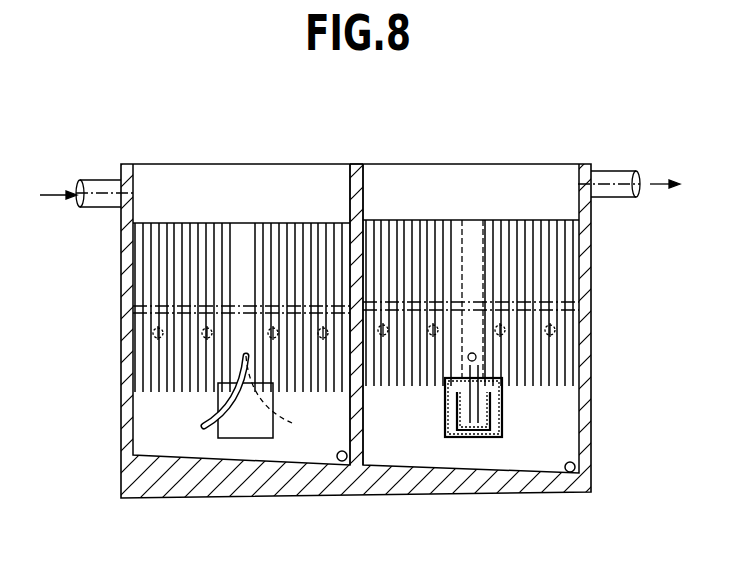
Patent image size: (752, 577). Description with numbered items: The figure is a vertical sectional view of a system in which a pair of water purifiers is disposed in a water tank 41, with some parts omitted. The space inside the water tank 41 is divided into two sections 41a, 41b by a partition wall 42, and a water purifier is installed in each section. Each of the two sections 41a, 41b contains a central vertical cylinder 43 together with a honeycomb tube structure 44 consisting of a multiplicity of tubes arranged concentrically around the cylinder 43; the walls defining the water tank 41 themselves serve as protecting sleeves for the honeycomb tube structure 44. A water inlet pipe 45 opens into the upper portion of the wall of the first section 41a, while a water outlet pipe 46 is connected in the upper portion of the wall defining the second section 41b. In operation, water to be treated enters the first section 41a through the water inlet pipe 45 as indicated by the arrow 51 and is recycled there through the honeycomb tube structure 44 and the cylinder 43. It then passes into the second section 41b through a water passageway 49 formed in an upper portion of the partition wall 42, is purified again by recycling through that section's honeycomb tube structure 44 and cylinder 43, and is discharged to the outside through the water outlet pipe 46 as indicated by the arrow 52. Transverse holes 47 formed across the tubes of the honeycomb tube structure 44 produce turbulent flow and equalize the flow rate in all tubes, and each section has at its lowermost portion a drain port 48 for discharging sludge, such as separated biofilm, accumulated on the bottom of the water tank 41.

The water tank 41 is at (265, 163).
The first section 41a is at (165, 178).
The second section 41b is at (425, 175).
The partition wall 42 is at (356, 220).
The central vertical cylinder 43 is at (240, 235).
The honeycomb tube structure 44 is at (157, 280).
The water inlet pipe 45 is at (100, 190).
The water outlet pipe 46 is at (610, 178).
The transverse holes 47 is at (147, 335).
The drain port 48 is at (346, 461).
The water passageway 49 is at (362, 163).
The arrow 51 is at (53, 194).
The arrow 52 is at (653, 187).